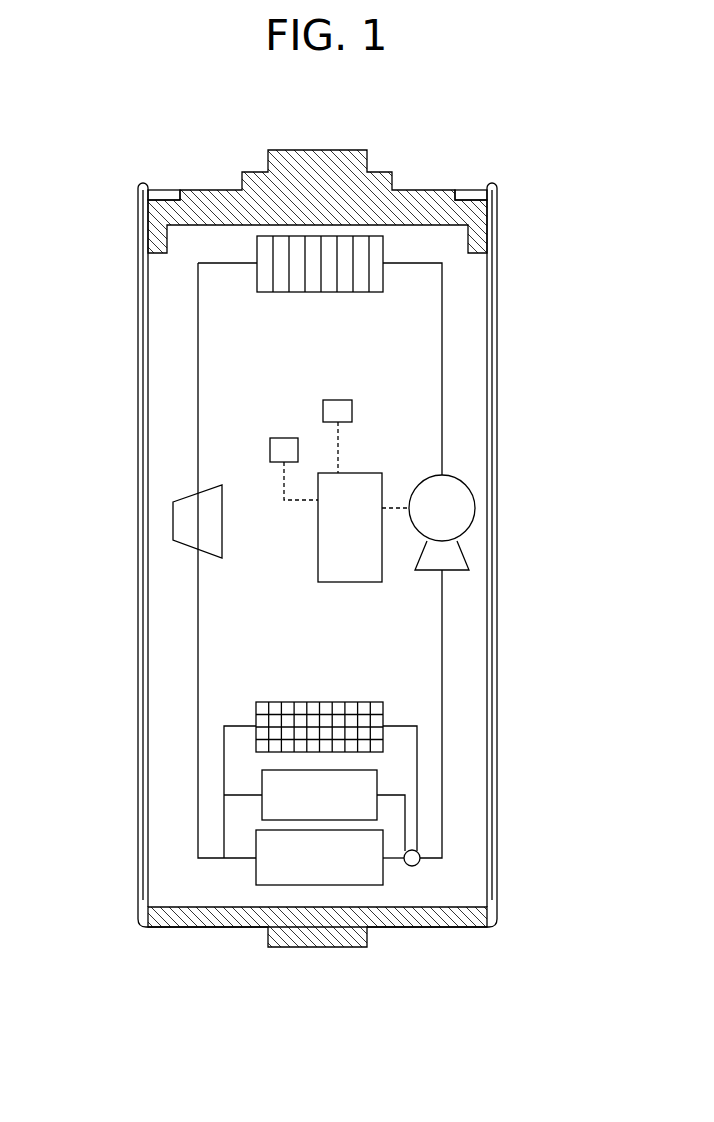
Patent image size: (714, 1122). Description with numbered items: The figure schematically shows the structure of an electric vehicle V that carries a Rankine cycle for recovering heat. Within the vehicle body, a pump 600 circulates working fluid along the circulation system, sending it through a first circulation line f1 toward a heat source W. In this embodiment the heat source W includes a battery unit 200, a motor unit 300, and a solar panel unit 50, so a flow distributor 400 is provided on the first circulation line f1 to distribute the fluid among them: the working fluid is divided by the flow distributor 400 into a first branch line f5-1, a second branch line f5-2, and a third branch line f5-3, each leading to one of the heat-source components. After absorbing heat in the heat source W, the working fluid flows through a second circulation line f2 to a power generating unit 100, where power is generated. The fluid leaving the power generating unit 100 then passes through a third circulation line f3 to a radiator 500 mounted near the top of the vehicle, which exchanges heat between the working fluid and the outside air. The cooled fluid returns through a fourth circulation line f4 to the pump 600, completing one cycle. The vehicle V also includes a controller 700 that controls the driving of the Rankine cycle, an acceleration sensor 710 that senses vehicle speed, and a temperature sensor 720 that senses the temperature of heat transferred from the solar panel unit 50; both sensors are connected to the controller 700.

The electric vehicle V is at (160, 152).
The radiator 500 is at (362, 236).
The controller 700 is at (363, 472).
The acceleration sensor 710 is at (343, 400).
The temperature sensor 720 is at (270, 448).
The pump 600 is at (458, 497).
The power generating unit 100 is at (173, 520).
The solar panel unit 50 is at (257, 741).
The battery unit 200 is at (293, 885).
The motor unit 300 is at (345, 820).
The flow distributor 400 is at (419, 866).
The heat source W is at (223, 1010).
The first circulation line f1 is at (442, 682).
The second circulation line f2 is at (198, 692).
The third circulation line f3 is at (198, 346).
The fourth circulation line f4 is at (442, 292).
The first branch line f5-1 is at (395, 795).
The second branch line f5-2 is at (392, 862).
The third branch line f5-3 is at (418, 747).